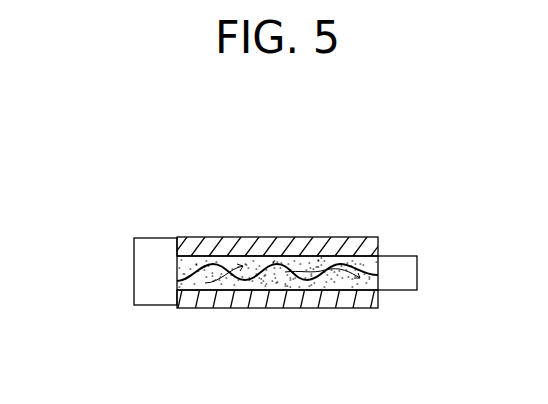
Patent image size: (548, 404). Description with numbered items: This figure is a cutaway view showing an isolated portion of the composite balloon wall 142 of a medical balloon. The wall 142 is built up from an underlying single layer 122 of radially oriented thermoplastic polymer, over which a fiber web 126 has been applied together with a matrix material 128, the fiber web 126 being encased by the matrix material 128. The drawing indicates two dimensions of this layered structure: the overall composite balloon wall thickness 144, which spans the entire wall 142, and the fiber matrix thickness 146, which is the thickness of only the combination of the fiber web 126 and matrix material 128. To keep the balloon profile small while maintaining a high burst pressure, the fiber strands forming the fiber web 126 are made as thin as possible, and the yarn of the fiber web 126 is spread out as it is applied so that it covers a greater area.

The single layer 122 is at (251, 298).
The fiber web 126 is at (277, 263).
The matrix material 128 is at (192, 262).
The composite balloon wall 142 is at (325, 212).
The composite balloon wall thickness 144 is at (134, 274).
The fiber matrix thickness 146 is at (418, 273).